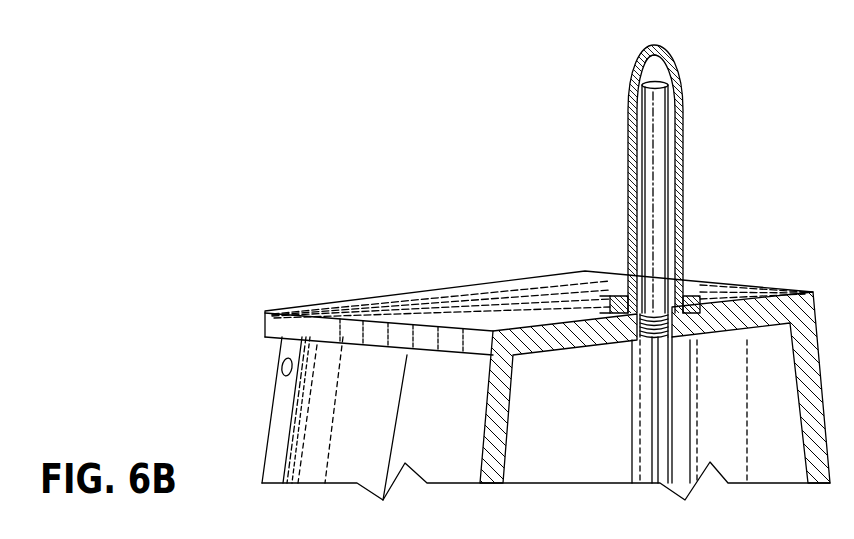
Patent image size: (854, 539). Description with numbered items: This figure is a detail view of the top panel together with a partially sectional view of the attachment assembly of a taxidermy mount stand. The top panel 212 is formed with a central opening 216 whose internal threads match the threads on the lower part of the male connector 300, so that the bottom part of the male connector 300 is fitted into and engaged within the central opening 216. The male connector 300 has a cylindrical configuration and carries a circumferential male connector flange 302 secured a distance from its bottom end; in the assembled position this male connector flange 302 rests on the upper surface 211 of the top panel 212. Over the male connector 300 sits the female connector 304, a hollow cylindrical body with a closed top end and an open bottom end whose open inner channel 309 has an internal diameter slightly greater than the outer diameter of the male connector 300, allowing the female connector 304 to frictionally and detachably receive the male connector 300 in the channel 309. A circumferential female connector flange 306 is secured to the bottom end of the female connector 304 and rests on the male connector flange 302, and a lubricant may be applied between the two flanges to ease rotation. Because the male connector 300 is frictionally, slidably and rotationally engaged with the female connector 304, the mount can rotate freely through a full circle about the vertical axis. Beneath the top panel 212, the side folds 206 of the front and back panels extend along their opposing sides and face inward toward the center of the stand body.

The longitudinal side fold 206 is at (270, 417).
The upper surface 211 is at (562, 298).
The top panel 212 is at (432, 286).
The central opening 216 is at (645, 341).
The male connector 300 is at (678, 143).
The male connector flange 302 is at (684, 312).
The female connector 304 is at (678, 70).
The female connector flange 306 is at (692, 284).
The inner channel 309 is at (656, 64).